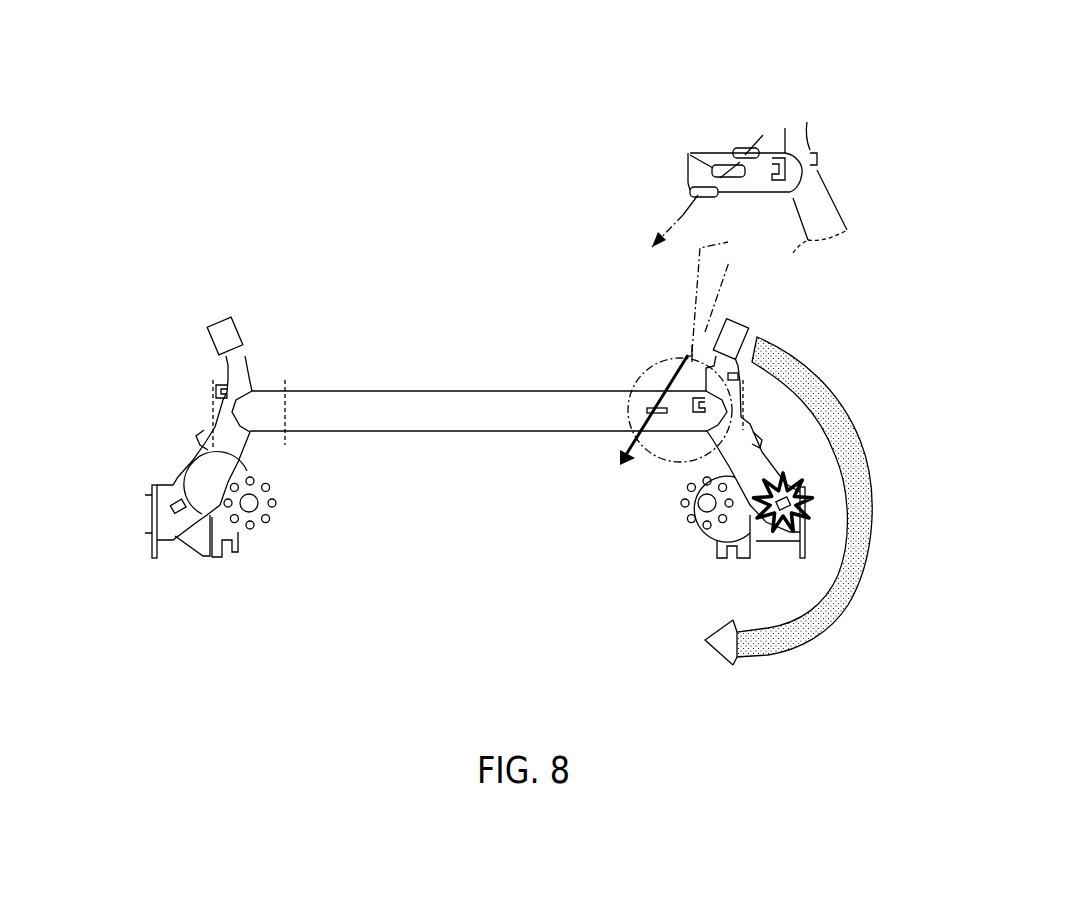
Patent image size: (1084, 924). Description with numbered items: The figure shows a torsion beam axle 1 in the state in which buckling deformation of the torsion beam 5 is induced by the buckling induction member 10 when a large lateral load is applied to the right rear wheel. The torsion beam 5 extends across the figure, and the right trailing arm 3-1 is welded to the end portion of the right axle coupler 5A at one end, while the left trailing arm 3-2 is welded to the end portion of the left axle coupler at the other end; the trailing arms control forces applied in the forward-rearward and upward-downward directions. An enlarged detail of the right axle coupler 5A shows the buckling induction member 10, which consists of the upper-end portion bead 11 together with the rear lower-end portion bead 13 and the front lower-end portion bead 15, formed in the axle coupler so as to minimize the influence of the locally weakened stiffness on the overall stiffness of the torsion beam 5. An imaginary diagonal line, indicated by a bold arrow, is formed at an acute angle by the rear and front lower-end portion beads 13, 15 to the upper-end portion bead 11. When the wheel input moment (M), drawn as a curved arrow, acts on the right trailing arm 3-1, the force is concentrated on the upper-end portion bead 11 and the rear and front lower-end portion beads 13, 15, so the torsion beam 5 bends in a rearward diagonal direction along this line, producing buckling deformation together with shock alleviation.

The torsion beam axle suspension 1 is at (474, 294).
The torsion beam 5 is at (470, 422).
The right axle coupler 5A is at (793, 182).
The right trailing arm 3-1 is at (755, 480).
The left trailing arm 3-2 is at (200, 473).
The buckling induction member 10 is at (285, 380).
The upper-end portion bead 11 is at (683, 165).
The rear lower-end portion bead 13 is at (690, 192).
The front lower-end portion bead 15 is at (733, 148).